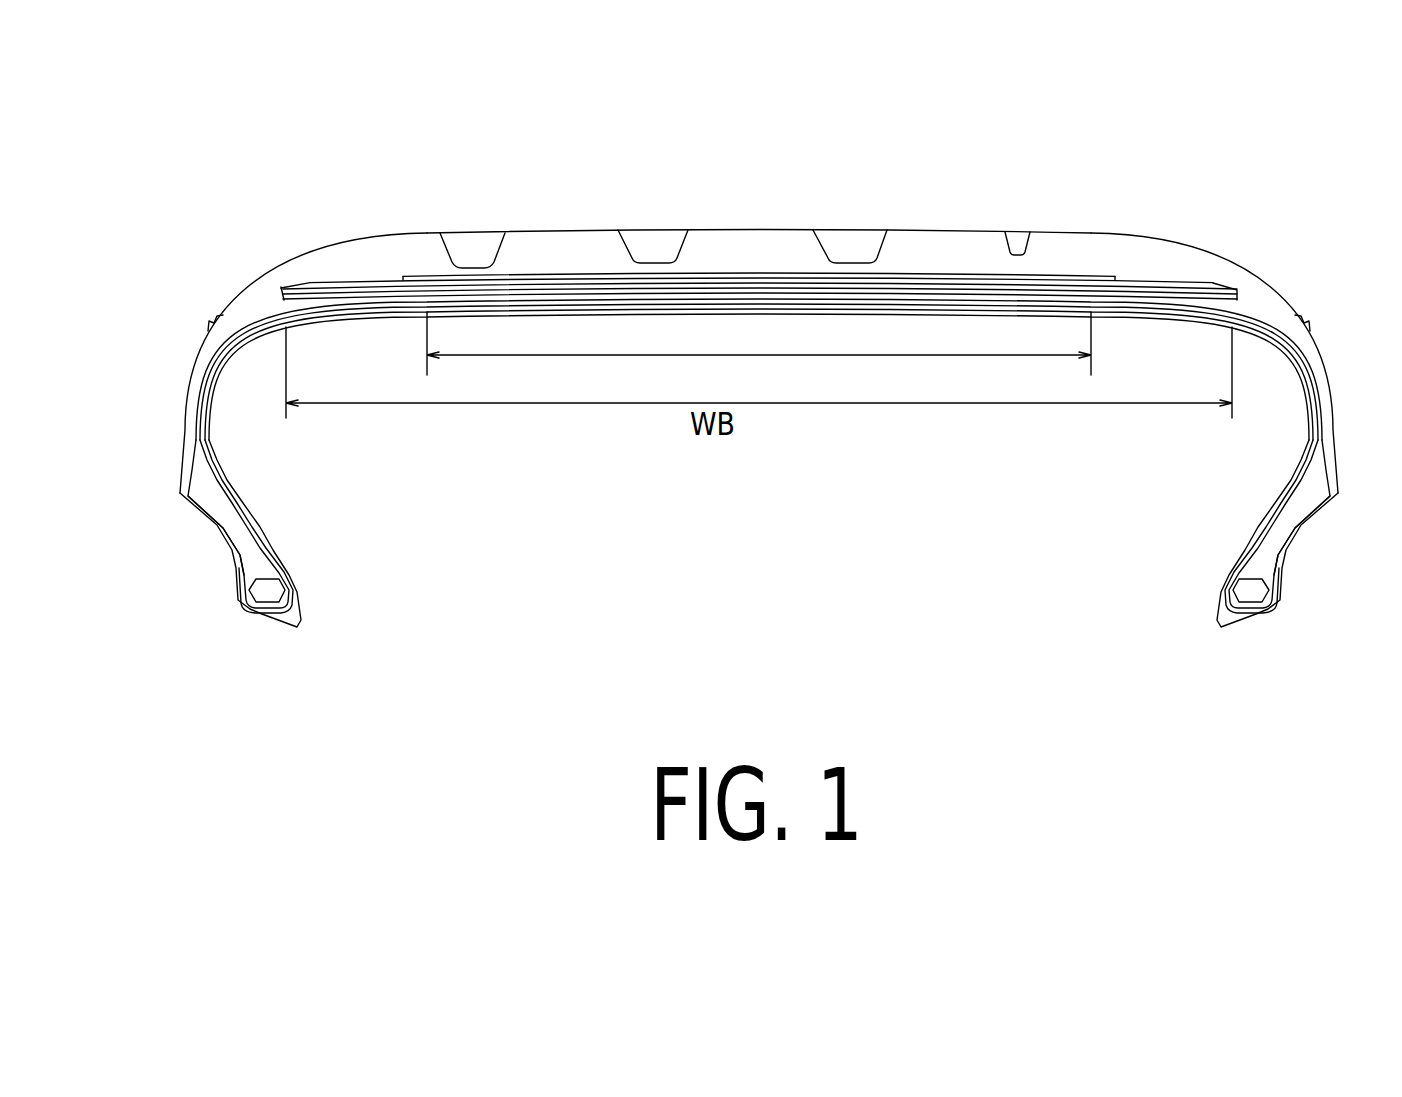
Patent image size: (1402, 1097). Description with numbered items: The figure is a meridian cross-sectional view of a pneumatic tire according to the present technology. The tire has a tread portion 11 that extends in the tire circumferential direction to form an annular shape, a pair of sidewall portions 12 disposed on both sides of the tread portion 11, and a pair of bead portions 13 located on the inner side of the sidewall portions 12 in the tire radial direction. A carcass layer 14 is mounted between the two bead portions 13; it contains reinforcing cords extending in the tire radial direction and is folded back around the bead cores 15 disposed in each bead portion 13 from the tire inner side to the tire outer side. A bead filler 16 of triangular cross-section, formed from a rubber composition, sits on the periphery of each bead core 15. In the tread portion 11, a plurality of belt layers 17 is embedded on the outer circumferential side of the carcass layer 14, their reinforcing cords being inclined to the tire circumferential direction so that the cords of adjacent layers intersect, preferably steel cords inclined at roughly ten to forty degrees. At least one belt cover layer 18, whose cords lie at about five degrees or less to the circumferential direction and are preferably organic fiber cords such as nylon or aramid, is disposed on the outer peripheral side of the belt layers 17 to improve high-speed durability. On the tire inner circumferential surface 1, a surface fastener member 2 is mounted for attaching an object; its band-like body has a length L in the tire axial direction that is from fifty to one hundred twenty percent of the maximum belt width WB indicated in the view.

The tire inner circumferential surface 1 is at (1158, 307).
The surface fastener member 2 is at (826, 300).
The tread portion 11 is at (1093, 228).
The sidewall portion 12 is at (175, 384).
The bead portion 13 is at (216, 554).
The carcass layer 14 is at (1260, 318).
The bead core 15 is at (268, 590).
The bead filler 16 is at (257, 551).
The belt layer 17 is at (1237, 298).
The belt cover layer 18 is at (1187, 293).